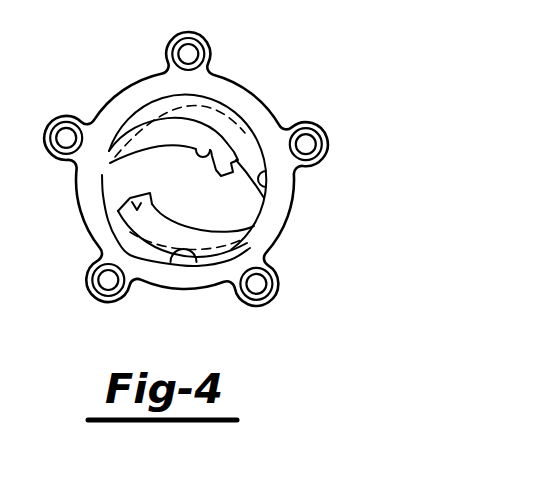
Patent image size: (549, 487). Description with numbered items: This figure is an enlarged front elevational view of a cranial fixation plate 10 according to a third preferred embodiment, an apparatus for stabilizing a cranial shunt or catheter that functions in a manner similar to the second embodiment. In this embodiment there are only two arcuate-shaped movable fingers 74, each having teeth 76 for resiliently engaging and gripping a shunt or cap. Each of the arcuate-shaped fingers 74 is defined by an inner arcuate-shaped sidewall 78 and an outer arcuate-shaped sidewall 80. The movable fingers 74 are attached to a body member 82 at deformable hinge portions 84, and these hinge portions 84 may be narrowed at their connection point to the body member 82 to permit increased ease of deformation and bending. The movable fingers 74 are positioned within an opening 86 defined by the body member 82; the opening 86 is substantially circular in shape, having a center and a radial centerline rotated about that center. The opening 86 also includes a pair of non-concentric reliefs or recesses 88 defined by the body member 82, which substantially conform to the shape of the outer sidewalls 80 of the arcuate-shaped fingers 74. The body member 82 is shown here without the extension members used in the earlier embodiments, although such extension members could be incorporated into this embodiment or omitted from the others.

The cranial fixation plate 10 is at (270, 65).
The arcuate-shaped movable fingers 74 is at (153, 135).
The teeth 76 is at (266, 214).
The inner arcuate-shaped sidewalls 78 is at (227, 143).
The outer arcuate-shaped sidewalls 80 is at (206, 127).
The body member 82 is at (254, 248).
The deformable hinge portions 84 is at (77, 172).
The opening 86 is at (265, 172).
The non-concentric reliefs or recesses 88 is at (193, 263).